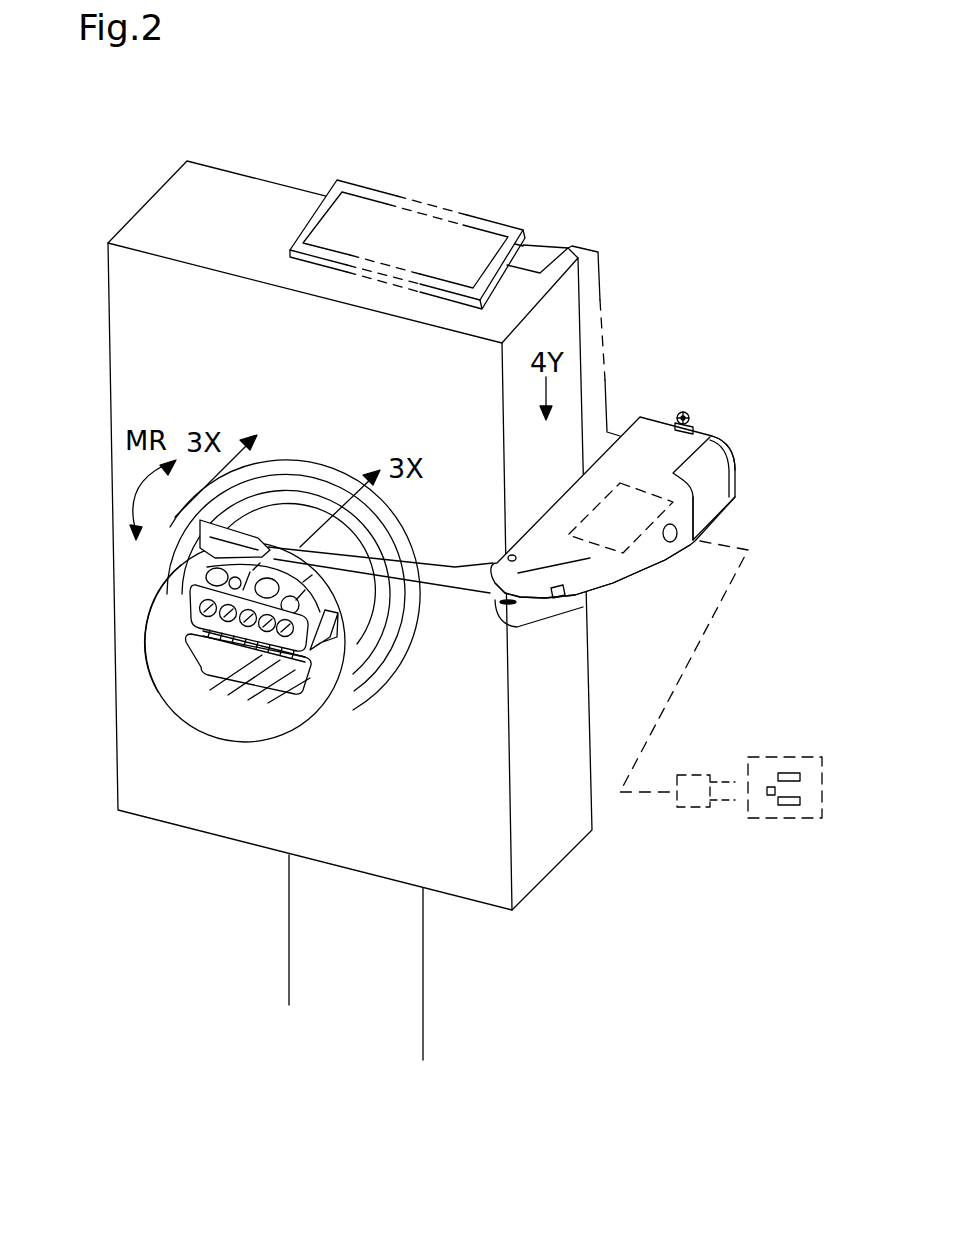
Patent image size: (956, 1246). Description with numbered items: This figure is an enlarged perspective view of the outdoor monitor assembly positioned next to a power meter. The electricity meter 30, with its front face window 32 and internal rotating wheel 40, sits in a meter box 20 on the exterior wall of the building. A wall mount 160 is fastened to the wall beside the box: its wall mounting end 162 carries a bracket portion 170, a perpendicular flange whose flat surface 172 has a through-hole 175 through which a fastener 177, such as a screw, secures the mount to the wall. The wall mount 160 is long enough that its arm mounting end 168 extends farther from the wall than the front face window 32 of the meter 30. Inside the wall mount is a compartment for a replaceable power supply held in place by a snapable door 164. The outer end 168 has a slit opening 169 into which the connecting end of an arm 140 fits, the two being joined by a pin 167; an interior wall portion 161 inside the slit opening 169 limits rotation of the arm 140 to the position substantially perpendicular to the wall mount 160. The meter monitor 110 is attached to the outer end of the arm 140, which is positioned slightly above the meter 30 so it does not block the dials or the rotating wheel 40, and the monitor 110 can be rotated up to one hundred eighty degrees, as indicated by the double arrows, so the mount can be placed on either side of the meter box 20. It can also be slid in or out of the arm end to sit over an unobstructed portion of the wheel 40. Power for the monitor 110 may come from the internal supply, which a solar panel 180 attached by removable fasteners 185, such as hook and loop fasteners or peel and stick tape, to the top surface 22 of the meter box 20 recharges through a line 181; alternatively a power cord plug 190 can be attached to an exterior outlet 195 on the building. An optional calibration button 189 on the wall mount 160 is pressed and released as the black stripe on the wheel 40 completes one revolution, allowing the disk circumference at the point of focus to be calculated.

The meter box 20 is at (133, 355).
The top surface of meter box 22 is at (142, 232).
The electricity meter 30 is at (168, 697).
The front face window 32 is at (157, 633).
The rotating wheel 40 is at (257, 652).
The meter monitor 110 is at (311, 448).
The arm 140 is at (461, 548).
The wall mount 160 is at (556, 469).
The interior wall portion 161 is at (655, 574).
The wall mounting end 162 is at (733, 446).
The snapable door 164 is at (718, 495).
The pin 167 is at (516, 560).
The arm mounting end 168 is at (500, 620).
The slit opening 169 is at (520, 574).
The bracket portion 170 is at (693, 420).
The flat surface 172 is at (692, 418).
The through-hole 175 is at (690, 416).
The fastener 177 is at (678, 412).
The solar panel 180 is at (420, 227).
The line 181 is at (600, 323).
The removable fasteners 185 is at (302, 266).
The calibration button 189 is at (677, 535).
The power cord plug 190 is at (648, 526).
The exterior outlet 195 is at (782, 762).